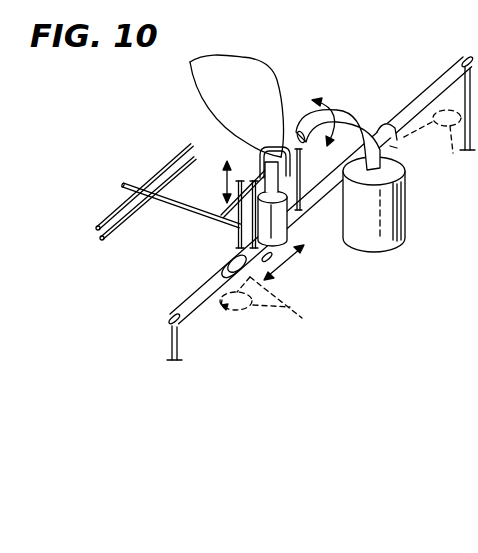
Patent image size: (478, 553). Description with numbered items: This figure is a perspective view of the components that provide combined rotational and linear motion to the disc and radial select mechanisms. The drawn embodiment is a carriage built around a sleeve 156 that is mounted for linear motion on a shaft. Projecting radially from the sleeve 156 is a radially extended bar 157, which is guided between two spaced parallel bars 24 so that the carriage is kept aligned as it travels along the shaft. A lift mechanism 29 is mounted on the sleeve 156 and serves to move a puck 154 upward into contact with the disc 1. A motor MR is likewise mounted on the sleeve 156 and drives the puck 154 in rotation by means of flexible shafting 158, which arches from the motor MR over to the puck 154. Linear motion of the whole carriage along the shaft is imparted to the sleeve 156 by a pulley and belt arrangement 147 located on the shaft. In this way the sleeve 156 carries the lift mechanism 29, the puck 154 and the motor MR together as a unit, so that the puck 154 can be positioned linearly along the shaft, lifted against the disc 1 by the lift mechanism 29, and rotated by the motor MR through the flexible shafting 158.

The disc 1 is at (233, 78).
The spaced parallel bars 24 is at (175, 154).
The lift mechanism 29 is at (258, 230).
The pulley and belt arrangement 147 is at (277, 300).
The puck 154 is at (259, 151).
The sleeve 156 is at (313, 208).
The radially extended bar 157 is at (190, 216).
The flexible shafting 158 is at (357, 118).
The motor MR is at (404, 215).